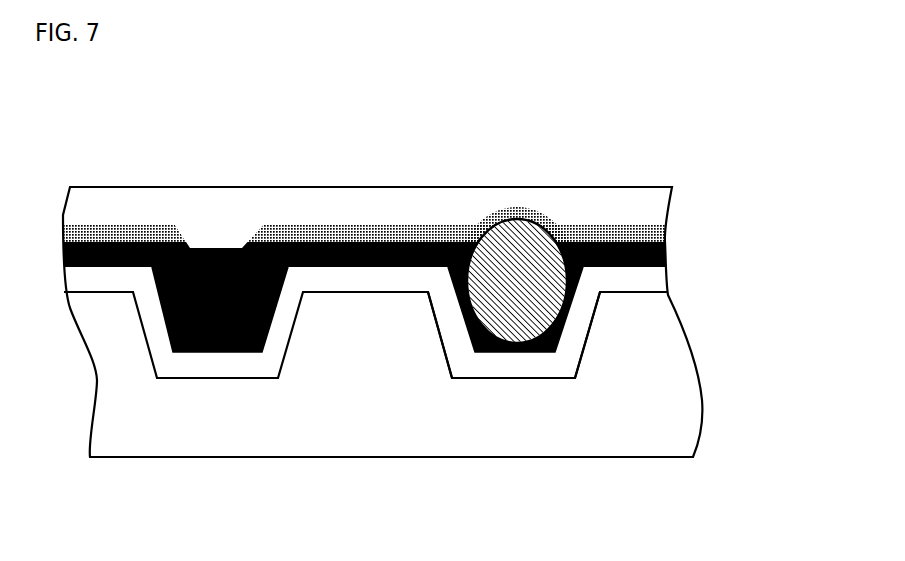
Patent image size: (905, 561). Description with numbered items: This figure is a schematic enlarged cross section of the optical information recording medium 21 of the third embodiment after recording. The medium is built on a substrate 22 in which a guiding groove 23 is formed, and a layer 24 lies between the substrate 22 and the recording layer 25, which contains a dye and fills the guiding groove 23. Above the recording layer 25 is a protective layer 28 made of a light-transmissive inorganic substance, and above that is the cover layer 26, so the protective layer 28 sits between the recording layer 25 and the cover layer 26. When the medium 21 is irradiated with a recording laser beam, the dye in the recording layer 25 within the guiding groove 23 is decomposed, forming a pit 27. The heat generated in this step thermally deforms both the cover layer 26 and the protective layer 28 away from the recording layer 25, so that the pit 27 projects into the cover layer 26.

The optical information recording medium 21 is at (385, 168).
The substrate 22 is at (628, 385).
The guiding groove 23 is at (498, 380).
The insulating film 24 is at (653, 283).
The recording layer 25 is at (665, 253).
The cover layer 26 is at (573, 202).
The pit 27 is at (498, 253).
The protective layer 28 is at (665, 233).